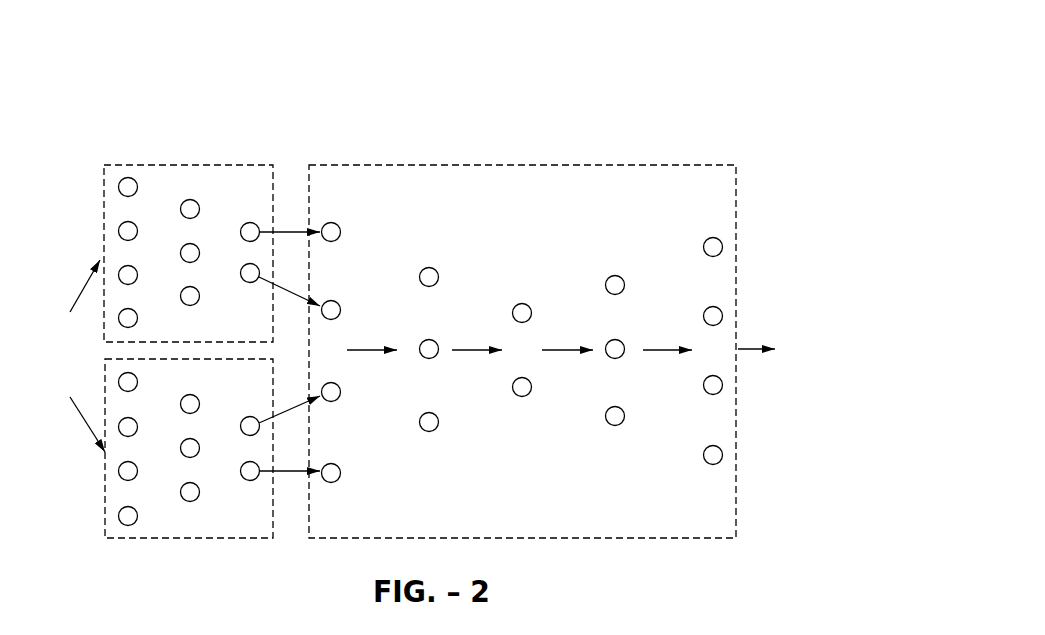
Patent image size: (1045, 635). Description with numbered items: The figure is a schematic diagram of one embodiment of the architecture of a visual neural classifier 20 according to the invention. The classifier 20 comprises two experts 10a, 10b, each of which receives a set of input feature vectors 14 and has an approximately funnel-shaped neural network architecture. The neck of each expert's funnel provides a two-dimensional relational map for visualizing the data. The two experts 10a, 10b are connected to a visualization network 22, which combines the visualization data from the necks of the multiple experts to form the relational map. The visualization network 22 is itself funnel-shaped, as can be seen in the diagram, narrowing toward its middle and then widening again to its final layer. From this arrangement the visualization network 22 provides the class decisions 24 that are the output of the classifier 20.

The expert 10a is at (248, 165).
The expert 10b is at (173, 540).
The input feature vectors 14 is at (86, 272).
The classifier 20 is at (598, 77).
The visualization network 22 is at (688, 165).
The class decisions 24 is at (739, 349).